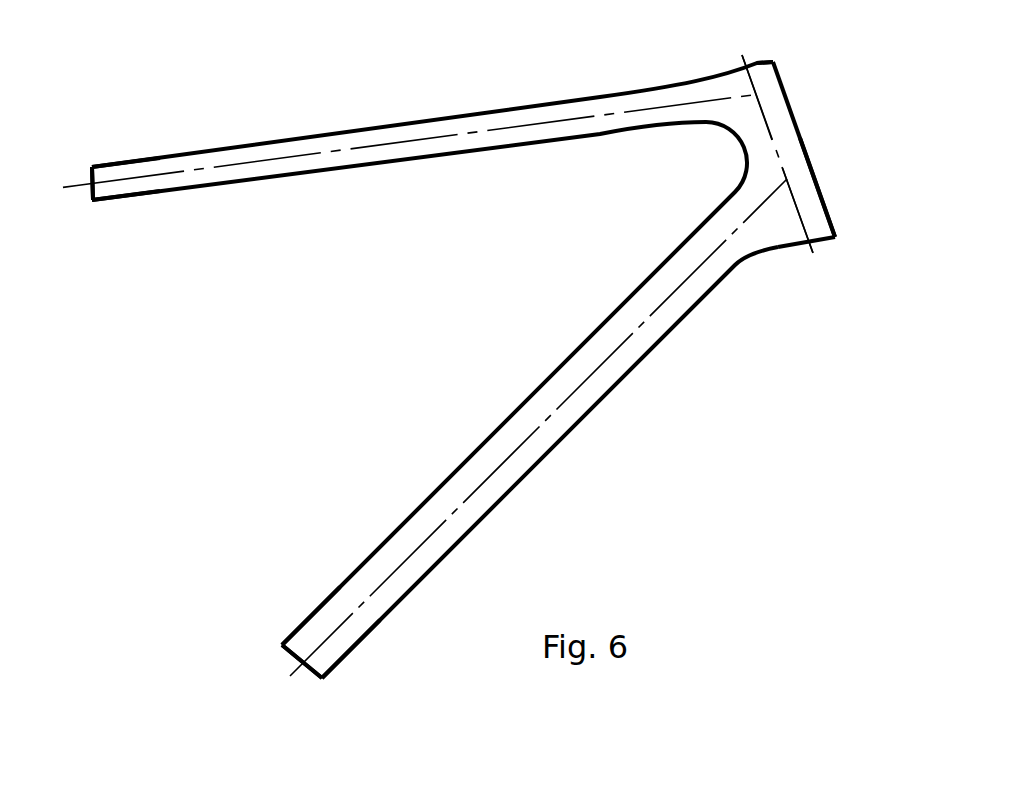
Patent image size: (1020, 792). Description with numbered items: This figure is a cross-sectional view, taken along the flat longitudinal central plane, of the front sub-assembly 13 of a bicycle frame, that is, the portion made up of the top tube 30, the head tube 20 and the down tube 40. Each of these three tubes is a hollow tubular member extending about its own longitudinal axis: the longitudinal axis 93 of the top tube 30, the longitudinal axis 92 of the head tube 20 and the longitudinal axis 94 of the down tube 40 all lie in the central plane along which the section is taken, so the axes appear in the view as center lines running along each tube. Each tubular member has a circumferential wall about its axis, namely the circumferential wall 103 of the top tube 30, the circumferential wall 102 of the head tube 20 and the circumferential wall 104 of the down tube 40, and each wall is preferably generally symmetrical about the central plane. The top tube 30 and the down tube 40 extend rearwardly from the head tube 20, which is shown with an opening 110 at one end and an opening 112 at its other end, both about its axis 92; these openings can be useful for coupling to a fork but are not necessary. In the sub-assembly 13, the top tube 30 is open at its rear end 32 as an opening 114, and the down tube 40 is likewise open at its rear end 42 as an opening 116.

The front sub-assembly 13 is at (463, 375).
The top tube 30 is at (432, 108).
The rear end of top tube 32 is at (126, 160).
The opening 114 is at (95, 207).
The longitudinal axis of top tube 93 is at (409, 133).
The circumferential wall of top tube 103 is at (399, 171).
The opening 110 is at (795, 76).
The longitudinal axis of head tube 92 is at (801, 154).
The head tube 20 is at (823, 149).
The circumferential wall of head tube 102 is at (847, 187).
The opening 112 is at (837, 226).
The down tube 40 is at (514, 383).
The circumferential wall of down tube 104 is at (550, 462).
The longitudinal axis of down tube 94 is at (538, 427).
The rear end of down tube 42 is at (349, 659).
The opening 116 is at (294, 662).